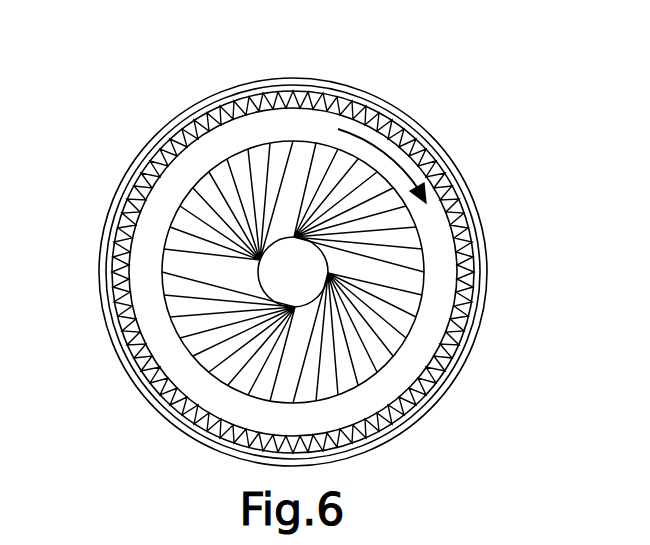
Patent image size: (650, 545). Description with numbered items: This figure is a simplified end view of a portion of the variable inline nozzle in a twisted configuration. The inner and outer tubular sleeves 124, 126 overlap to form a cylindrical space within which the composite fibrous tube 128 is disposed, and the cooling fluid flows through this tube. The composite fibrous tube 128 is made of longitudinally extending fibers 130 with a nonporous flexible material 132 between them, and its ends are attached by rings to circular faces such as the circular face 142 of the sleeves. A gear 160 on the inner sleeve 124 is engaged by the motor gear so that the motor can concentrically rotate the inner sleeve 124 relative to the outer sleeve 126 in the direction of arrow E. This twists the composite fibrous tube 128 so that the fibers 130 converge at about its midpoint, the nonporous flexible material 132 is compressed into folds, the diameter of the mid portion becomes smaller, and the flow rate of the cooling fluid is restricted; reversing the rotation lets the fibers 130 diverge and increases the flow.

The inner tubular sleeve 124 is at (447, 249).
The outer tubular sleeve 126 is at (460, 161).
The composite fibrous tube 128 is at (160, 284).
The longitudinally extending fibers 130 is at (195, 257).
The nonporous flexible material 132 is at (232, 365).
The circular face 142 is at (197, 160).
The gear 160 is at (433, 372).
The arrow E is at (408, 137).